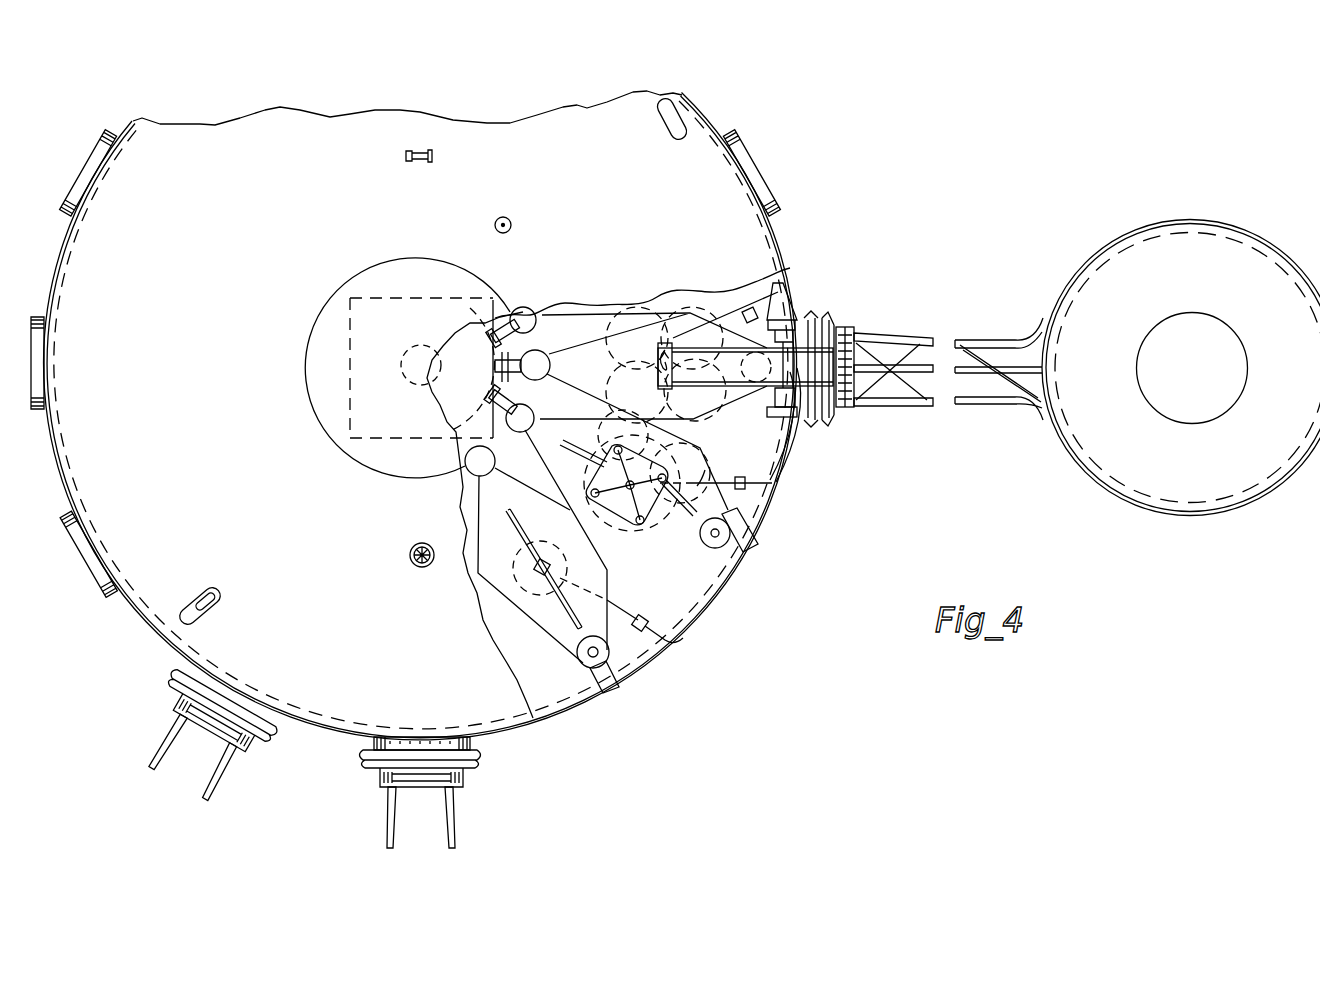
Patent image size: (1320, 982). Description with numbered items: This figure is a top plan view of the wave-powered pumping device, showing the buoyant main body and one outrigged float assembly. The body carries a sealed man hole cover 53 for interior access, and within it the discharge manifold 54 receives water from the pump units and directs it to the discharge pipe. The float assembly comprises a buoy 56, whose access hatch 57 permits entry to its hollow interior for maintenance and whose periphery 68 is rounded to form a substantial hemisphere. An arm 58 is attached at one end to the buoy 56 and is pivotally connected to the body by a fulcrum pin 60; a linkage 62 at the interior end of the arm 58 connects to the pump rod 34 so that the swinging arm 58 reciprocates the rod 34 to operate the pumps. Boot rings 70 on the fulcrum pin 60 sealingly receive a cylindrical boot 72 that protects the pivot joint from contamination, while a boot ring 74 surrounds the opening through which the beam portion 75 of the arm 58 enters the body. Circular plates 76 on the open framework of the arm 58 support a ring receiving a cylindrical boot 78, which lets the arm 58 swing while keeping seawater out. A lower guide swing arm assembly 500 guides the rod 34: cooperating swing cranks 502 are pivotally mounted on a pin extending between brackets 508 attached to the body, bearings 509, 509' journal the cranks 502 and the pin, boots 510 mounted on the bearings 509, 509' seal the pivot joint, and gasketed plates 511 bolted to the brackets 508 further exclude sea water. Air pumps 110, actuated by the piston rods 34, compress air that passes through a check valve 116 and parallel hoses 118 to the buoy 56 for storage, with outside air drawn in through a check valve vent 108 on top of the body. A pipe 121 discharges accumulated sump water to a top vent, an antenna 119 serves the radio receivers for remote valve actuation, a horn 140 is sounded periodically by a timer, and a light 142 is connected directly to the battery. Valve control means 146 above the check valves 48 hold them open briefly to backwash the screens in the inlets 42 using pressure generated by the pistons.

The rod 34 is at (653, 354).
The inlet 42 is at (612, 688).
The check valve 48 is at (582, 665).
The man hole cover 53 is at (432, 260).
The discharge manifold 54 is at (426, 300).
The buoy 56 is at (1254, 239).
The access hatch 57 is at (1201, 368).
The arm 58 is at (910, 328).
The fulcrum pin 60 is at (794, 415).
The linkage 62 is at (682, 321).
The periphery 68 is at (1030, 402).
The boot ring 70 is at (792, 318).
The cylindrical boot 72 is at (770, 407).
The boot ring 74 is at (72, 193).
The beam portion 75 is at (736, 383).
The circular plate 76 is at (858, 326).
The cylindrical boot 78 is at (828, 320).
The check valve vent 108 is at (202, 600).
The air pump 110 is at (518, 554).
The check valve 116 is at (750, 302).
The hose 118 is at (978, 370).
The antenna 119 is at (510, 226).
The pipe 121 is at (664, 123).
The horn 140 is at (438, 157).
The light 142 is at (420, 544).
The valve control means 146 is at (598, 653).
The lower guide swing arm assembly 500 is at (645, 560).
The swing crank 502 is at (560, 498).
The bracket 508 is at (500, 468).
The bearing 509 is at (632, 477).
The bearing 509' is at (622, 477).
The boot 510 is at (574, 448).
The plate 511 is at (578, 430).